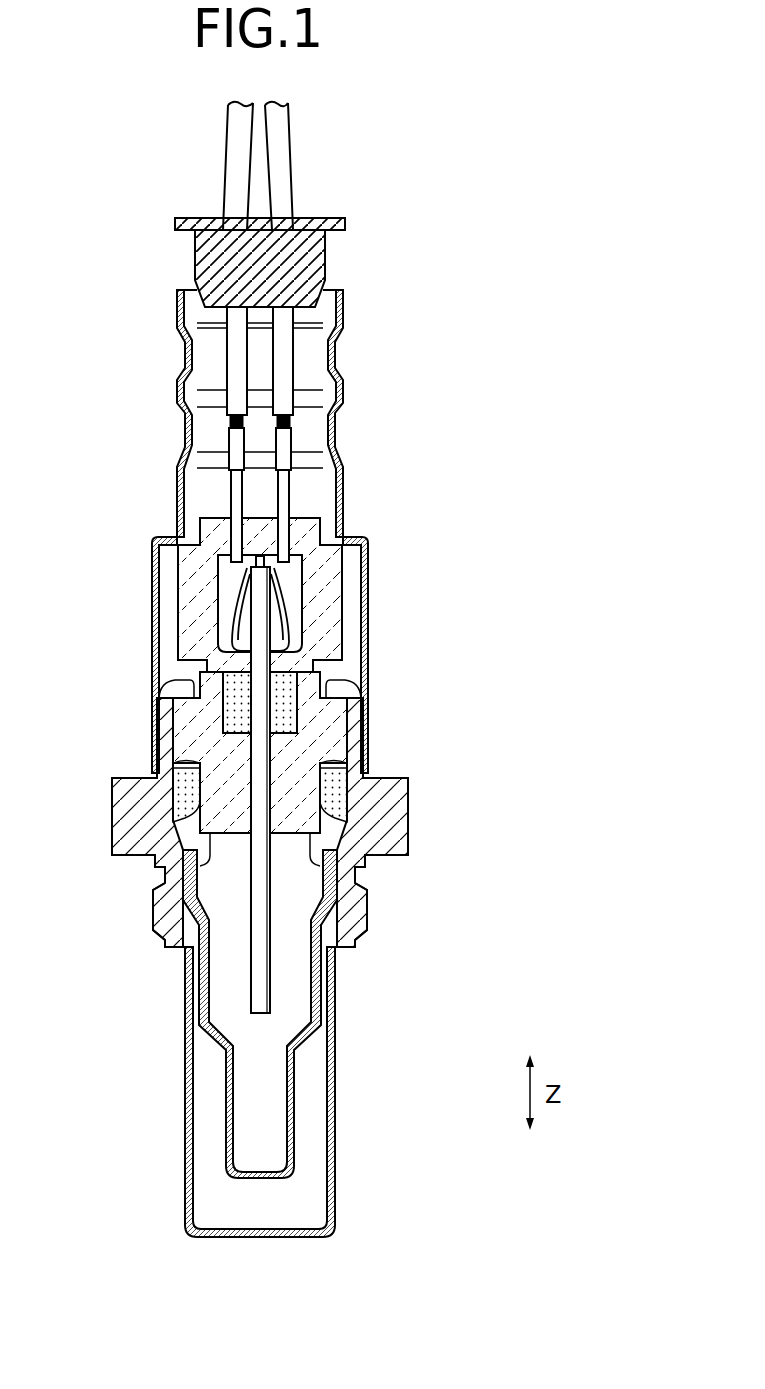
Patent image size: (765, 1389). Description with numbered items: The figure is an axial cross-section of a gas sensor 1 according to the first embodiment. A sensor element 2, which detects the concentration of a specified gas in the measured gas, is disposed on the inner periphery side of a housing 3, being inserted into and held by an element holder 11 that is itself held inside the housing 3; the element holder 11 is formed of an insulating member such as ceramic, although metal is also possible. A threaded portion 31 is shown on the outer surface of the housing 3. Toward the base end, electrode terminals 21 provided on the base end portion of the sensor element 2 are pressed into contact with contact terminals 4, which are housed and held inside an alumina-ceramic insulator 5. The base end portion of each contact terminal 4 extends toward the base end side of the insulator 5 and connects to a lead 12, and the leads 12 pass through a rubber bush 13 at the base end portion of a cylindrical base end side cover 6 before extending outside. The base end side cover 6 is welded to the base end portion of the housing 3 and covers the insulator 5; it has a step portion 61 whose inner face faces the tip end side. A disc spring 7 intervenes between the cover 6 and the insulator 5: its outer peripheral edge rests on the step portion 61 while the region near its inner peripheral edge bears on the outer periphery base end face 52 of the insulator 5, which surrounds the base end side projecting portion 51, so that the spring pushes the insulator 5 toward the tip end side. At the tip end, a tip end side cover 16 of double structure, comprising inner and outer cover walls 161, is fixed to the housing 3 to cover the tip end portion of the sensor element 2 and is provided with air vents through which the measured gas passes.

The gas sensor 1 is at (416, 157).
The sensor element 2 is at (262, 970).
The housing 3 is at (388, 815).
The threaded portion 31 is at (363, 908).
The contact terminal 4 is at (272, 617).
The insulator 5 is at (190, 600).
The base end side projecting portion 51 is at (213, 528).
The outer periphery base end face 52 is at (325, 538).
The base end side cover 6 is at (365, 650).
The step portion 61 is at (360, 535).
The disc spring 7 is at (173, 530).
The element holder 11 is at (233, 758).
The lead 12 is at (243, 152).
The rubber bush 13 is at (213, 260).
The tip end side cover 16 is at (228, 1123).
The cover wall 161 is at (203, 1013).
The electrode terminal 21 is at (273, 588).